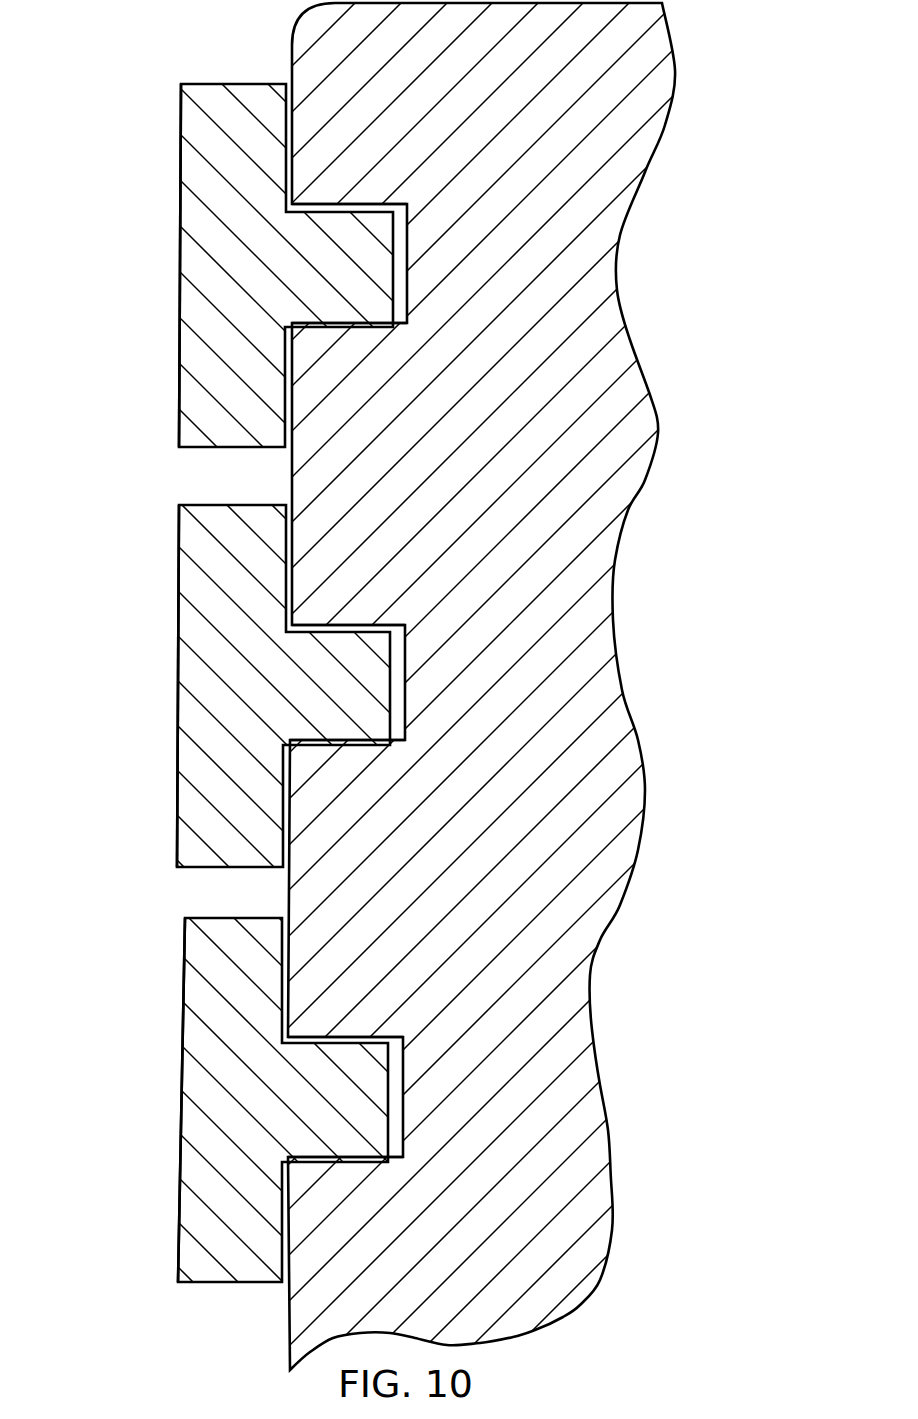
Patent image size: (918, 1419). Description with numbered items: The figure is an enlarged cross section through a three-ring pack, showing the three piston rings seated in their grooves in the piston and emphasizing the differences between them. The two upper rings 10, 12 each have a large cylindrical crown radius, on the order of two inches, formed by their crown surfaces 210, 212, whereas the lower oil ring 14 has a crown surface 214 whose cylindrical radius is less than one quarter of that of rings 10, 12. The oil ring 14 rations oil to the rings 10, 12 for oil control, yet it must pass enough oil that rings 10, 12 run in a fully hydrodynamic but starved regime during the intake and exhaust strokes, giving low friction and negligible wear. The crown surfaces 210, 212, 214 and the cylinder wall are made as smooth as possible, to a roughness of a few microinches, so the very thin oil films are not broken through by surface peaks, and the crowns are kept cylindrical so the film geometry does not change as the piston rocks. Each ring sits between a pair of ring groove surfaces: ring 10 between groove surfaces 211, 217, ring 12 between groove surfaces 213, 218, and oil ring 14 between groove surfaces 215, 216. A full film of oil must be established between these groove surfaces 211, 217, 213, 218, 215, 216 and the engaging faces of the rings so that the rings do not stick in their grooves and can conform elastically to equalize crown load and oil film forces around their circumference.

The ring 10 is at (210, 318).
The ring 12 is at (212, 698).
The oil ring 14 is at (203, 1130).
The crown surface 210 is at (180, 160).
The crown surface 212 is at (179, 568).
The crown surface 214 is at (183, 1015).
The ring groove surface 211 is at (365, 204).
The ring groove surface 217 is at (362, 325).
The ring groove surface 213 is at (362, 625).
The ring groove surface 218 is at (357, 748).
The ring groove surface 215 is at (357, 1037).
The ring groove surface 216 is at (357, 1163).